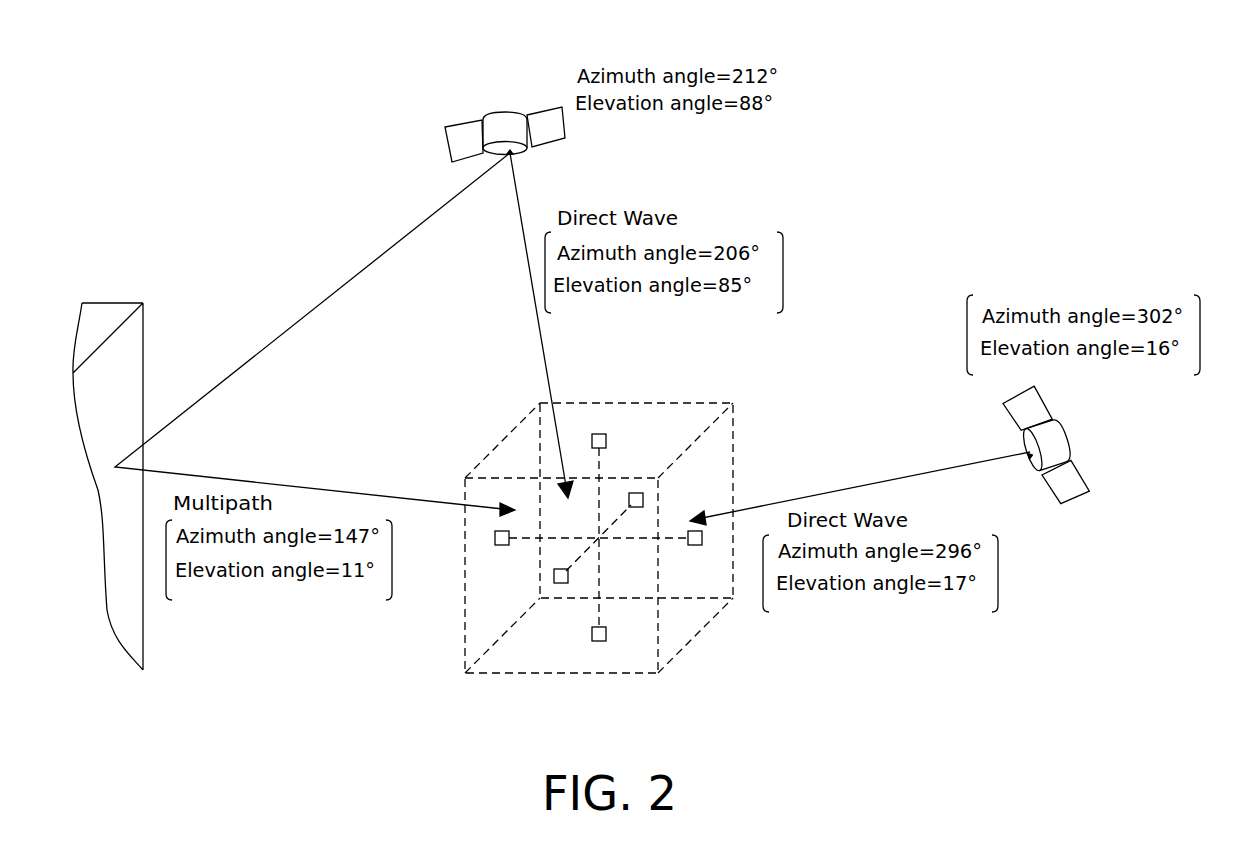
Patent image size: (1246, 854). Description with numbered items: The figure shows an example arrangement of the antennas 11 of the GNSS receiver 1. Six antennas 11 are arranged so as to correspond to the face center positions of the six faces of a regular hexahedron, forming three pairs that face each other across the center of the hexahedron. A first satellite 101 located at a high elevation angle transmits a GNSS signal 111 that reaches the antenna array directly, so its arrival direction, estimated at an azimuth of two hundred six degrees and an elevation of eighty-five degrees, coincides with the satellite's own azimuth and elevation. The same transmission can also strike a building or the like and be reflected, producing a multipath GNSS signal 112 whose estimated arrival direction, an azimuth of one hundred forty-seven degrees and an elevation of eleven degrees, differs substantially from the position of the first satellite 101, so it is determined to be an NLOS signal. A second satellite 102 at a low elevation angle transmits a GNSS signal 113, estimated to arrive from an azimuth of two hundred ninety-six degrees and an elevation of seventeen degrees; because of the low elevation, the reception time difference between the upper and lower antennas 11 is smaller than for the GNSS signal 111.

The GNSS receiver 1 is at (717, 386).
The antenna 11 is at (606, 441).
The first satellite 101 is at (503, 108).
The second satellite 102 is at (1070, 435).
The GNSS signal 111 is at (545, 357).
The multipath GNSS signal 112 is at (352, 490).
The GNSS signal 113 is at (855, 487).